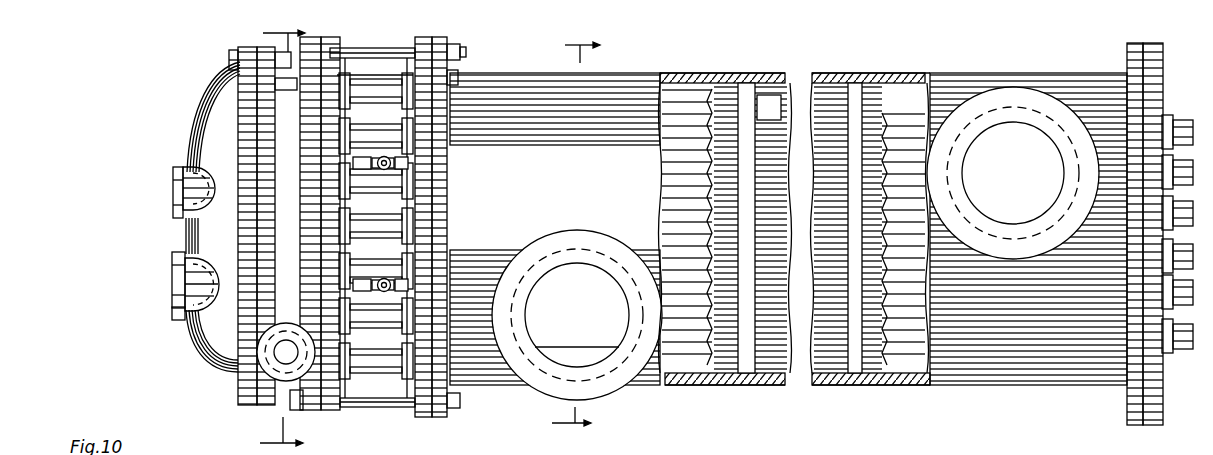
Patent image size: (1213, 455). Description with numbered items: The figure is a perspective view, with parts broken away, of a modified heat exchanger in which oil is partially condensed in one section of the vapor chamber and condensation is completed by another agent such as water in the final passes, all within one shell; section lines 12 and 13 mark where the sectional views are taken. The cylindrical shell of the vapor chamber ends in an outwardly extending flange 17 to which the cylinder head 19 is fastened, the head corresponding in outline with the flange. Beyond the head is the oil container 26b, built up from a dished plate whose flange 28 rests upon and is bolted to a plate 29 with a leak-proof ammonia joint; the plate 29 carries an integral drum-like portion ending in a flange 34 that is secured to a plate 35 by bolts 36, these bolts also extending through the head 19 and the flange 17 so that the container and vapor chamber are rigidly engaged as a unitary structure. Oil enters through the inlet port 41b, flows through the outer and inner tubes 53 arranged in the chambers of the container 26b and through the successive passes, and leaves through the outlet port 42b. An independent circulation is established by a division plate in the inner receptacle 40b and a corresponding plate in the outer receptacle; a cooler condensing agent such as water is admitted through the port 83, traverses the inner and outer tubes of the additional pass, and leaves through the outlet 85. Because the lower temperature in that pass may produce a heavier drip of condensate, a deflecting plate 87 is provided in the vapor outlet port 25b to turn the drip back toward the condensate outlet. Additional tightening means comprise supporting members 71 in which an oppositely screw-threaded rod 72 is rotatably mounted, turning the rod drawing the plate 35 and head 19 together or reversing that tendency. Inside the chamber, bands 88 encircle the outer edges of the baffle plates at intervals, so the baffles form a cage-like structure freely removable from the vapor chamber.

The section line 12- 12 is at (285, 240).
The section line 13- 13 is at (564, 234).
The flange 17 is at (462, 52).
The cylinder head 19 is at (428, 37).
The vapor outlet port 25b is at (540, 327).
The oil container 26b is at (222, 92).
The flange 28 is at (246, 218).
The plate 29 is at (263, 238).
The flange 34 is at (309, 203).
The plate 35 is at (328, 226).
The bolts 36 is at (373, 50).
The inner receptacle 40b is at (278, 255).
The inlet port 41b is at (176, 174).
The outlet port 42b is at (174, 262).
The tubes 53 is at (371, 146).
The supporting members 71 is at (397, 167).
The rod 72 is at (386, 286).
The port 83 is at (173, 318).
The outlet 85 is at (284, 374).
The deflecting plate 87 is at (572, 350).
The bands 88 is at (845, 347).